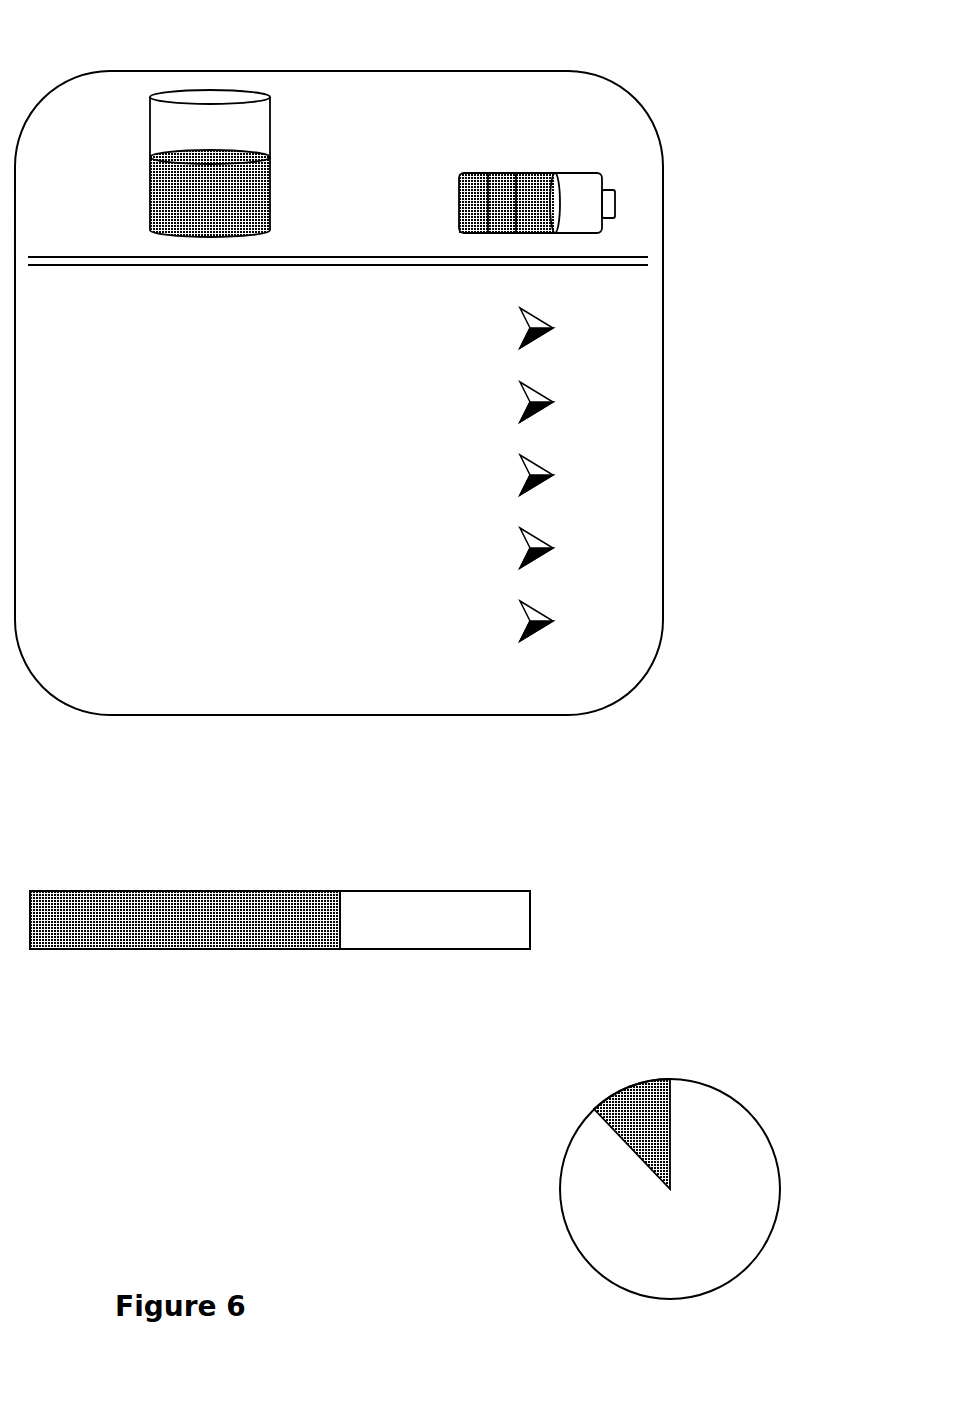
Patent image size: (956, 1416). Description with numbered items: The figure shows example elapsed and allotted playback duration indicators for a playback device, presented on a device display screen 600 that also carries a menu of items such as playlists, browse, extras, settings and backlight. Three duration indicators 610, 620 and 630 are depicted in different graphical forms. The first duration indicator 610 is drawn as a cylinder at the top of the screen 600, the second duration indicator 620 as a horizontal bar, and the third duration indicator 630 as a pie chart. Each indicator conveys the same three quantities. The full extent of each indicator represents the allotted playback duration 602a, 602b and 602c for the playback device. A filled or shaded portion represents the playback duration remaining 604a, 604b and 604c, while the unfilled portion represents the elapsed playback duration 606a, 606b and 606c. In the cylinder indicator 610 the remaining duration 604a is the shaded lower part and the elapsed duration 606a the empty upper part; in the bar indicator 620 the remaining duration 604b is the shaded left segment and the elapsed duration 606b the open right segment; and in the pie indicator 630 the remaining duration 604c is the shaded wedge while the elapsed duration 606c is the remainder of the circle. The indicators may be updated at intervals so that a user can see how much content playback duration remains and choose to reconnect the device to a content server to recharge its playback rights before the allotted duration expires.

The display screen menu 600 is at (663, 452).
The duration indicator 610 is at (216, 93).
The allotted playback duration 602a is at (145, 98).
The playback duration remaining 604a is at (283, 165).
The elapsed playback duration 606a is at (283, 97).
The duration indicator 620 is at (566, 904).
The allotted playback duration 602b is at (530, 963).
The playback duration remaining 604b is at (340, 876).
The elapsed playback duration 606b is at (530, 876).
The duration indicator 630 is at (547, 1186).
The allotted playback duration 602c is at (578, 1243).
The playback duration remaining 604c is at (636, 1100).
The elapsed playback duration 606c is at (706, 1232).